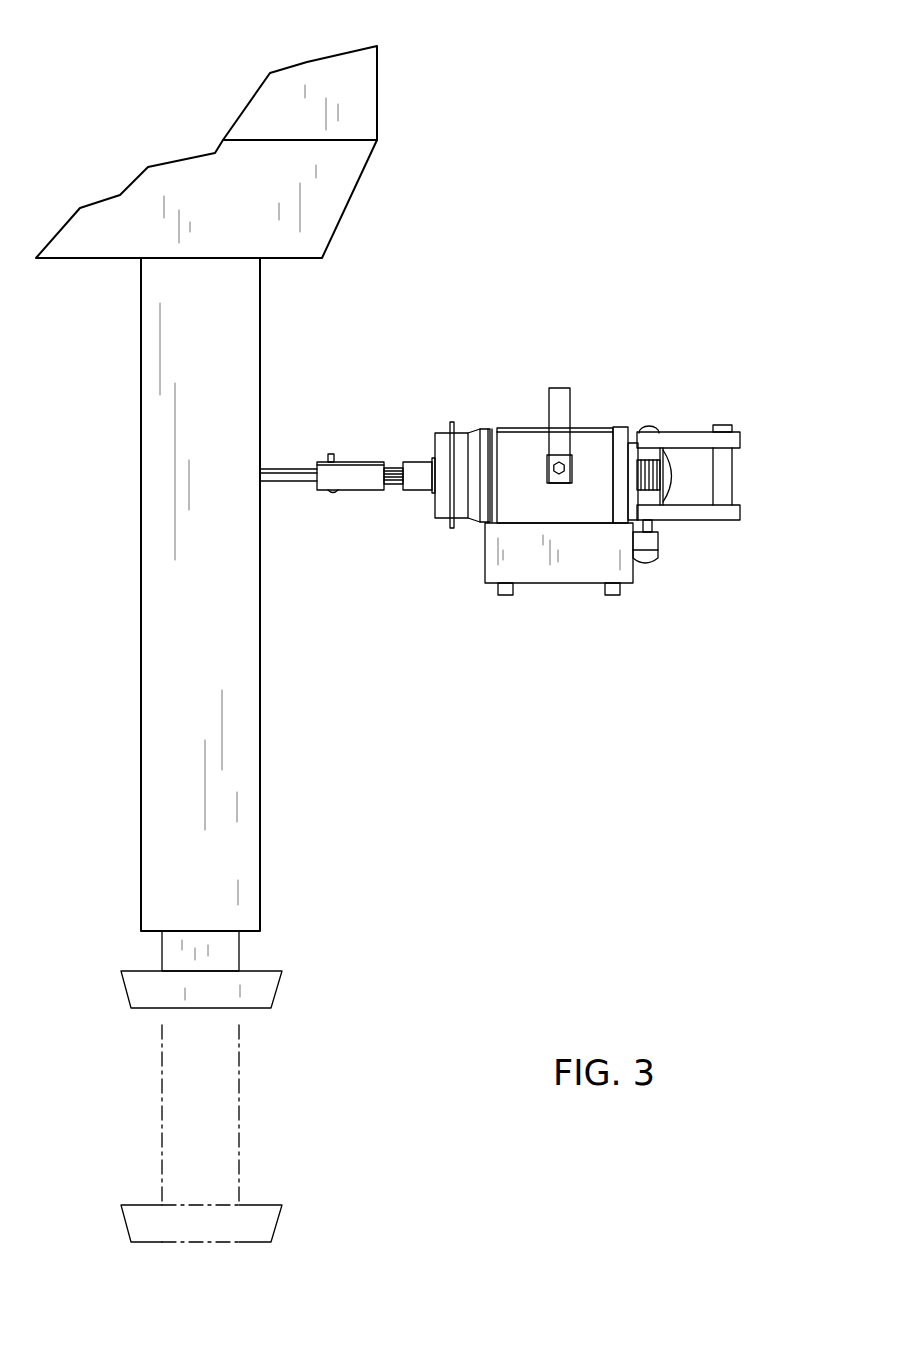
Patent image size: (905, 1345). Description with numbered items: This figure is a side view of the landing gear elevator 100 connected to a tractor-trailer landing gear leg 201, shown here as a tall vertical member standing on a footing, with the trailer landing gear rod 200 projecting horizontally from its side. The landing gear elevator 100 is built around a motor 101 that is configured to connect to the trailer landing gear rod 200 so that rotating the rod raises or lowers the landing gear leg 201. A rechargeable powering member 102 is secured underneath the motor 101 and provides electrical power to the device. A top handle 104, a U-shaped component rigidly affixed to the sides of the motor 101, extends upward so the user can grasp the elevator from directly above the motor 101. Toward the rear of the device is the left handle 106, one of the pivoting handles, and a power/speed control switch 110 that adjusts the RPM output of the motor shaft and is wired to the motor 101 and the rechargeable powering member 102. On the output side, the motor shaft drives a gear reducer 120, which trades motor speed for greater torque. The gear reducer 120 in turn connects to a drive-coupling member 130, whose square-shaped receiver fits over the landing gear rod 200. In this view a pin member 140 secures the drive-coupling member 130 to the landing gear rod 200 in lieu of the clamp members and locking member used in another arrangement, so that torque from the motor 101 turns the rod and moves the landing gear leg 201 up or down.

The landing gear elevator 100 is at (634, 302).
The motor 101 is at (522, 512).
The rechargeable powering member 102 is at (550, 572).
The top handle 104 is at (560, 388).
The left handle 106 is at (695, 437).
The power/speed control switch 110 is at (650, 427).
The gear reducer 120 is at (487, 398).
The drive-coupling member 130 is at (357, 483).
The pin member 140 is at (331, 454).
The trailer landing gear rod 200 is at (239, 950).
The tractor-trailer landing gear leg 201 is at (272, 469).